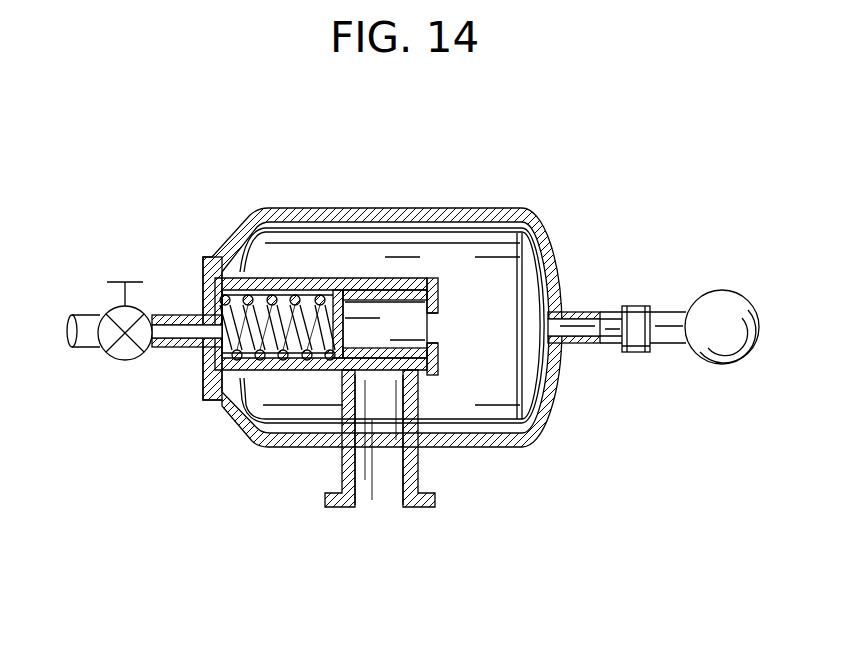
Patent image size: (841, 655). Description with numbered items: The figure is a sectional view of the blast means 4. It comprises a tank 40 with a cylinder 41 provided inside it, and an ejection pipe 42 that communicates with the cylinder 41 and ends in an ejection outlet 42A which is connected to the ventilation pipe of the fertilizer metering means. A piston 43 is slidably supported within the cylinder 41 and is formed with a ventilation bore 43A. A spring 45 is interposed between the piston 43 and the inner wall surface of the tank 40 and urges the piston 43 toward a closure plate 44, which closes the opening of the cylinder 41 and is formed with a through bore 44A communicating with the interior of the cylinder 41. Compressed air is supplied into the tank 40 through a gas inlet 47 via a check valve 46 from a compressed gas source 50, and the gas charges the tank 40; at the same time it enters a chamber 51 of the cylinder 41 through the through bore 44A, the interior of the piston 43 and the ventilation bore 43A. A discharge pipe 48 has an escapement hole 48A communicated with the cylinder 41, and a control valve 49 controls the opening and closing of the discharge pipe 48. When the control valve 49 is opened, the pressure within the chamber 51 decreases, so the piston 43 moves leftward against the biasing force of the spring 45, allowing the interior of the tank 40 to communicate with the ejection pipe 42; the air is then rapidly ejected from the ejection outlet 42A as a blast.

The blast means 4 is at (386, 142).
The tank 40 is at (518, 440).
The cylinder 41 is at (298, 282).
The ejection pipe 42 is at (418, 472).
The ejection outlet 42A is at (373, 475).
The piston 43 is at (406, 290).
The ventilation bore 43A is at (343, 333).
The closure plate 44 is at (437, 291).
The through bore 44A is at (437, 331).
The spring 45 is at (213, 401).
The check valve 46 is at (637, 336).
The gas inlet 47 is at (580, 317).
The discharge pipe 48 is at (158, 347).
The escapement hole 48A is at (173, 333).
The control valve 49 is at (116, 352).
The compressed gas source 50 is at (690, 310).
The chamber 51 is at (273, 350).